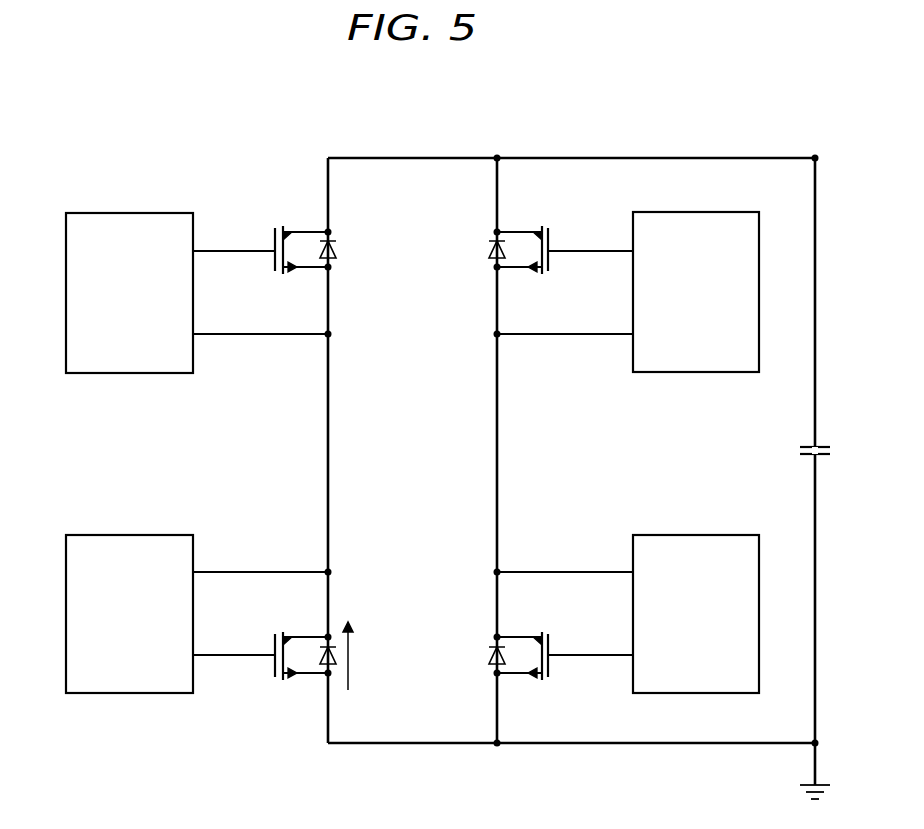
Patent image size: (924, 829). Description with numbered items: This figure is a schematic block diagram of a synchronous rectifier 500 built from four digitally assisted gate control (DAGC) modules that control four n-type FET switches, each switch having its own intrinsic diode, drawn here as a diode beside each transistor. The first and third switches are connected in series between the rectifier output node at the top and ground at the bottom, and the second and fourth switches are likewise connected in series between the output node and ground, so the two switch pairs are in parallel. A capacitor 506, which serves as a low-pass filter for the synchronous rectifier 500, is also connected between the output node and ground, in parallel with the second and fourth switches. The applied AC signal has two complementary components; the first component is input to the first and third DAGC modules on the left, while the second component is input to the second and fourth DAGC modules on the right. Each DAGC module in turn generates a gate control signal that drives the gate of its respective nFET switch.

The synchronous rectifier 500 is at (432, 89).
The capacitor 506 is at (833, 452).